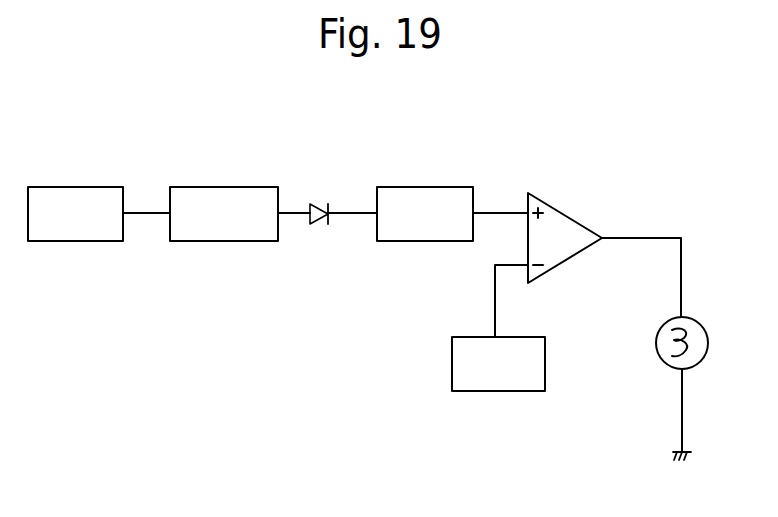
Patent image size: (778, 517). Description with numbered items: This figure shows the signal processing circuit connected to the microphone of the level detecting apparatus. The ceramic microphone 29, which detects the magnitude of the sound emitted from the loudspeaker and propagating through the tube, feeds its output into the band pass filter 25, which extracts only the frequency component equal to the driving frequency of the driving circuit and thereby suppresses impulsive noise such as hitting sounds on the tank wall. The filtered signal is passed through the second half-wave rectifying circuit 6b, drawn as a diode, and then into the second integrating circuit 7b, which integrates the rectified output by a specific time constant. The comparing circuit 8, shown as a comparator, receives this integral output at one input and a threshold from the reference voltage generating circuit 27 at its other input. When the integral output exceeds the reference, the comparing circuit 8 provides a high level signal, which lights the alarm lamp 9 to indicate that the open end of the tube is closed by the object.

The ceramic microphone 29 is at (70, 190).
The band pass filter 25 is at (206, 190).
The second half-wave rectifying circuit 6b is at (315, 205).
The second integrating circuit 7b is at (405, 190).
The comparing circuit 8 is at (558, 208).
The reference voltage generating circuit 27 is at (508, 392).
The alarm lamp 9 is at (688, 316).